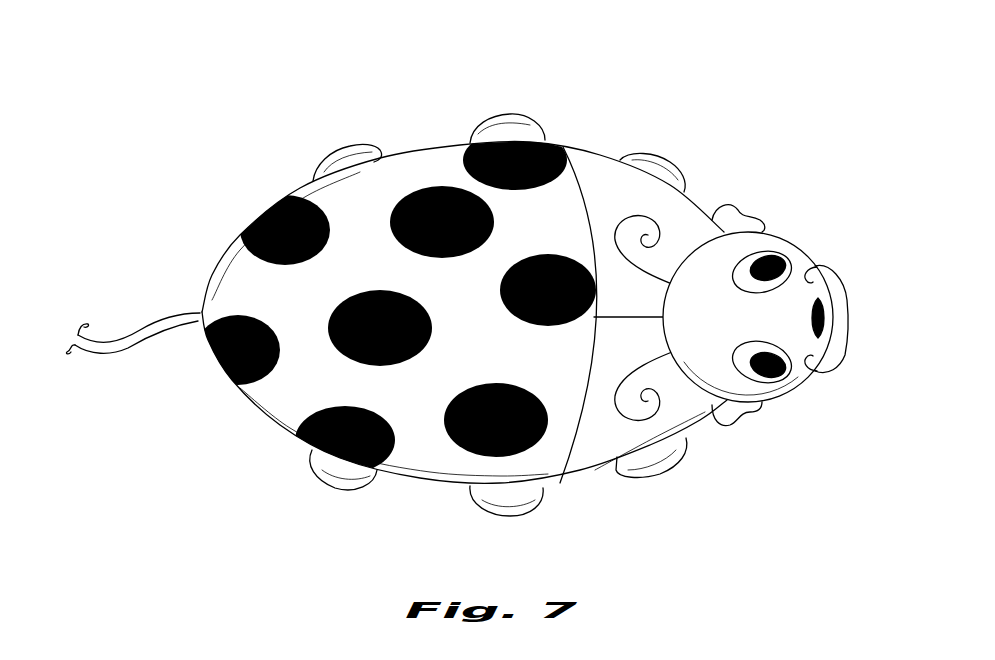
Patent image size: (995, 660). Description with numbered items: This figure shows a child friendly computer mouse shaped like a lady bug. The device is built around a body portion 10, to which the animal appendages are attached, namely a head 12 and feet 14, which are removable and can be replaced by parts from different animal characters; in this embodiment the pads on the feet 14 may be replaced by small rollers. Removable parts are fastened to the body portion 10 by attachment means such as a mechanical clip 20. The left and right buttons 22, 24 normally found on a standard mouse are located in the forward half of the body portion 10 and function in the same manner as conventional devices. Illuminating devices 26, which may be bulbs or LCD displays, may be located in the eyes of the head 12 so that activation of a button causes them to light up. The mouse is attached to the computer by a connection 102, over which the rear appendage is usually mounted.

The body portion 10 is at (387, 188).
The head 12 is at (783, 380).
The feet 14 is at (327, 467).
The mechanical clip 20 is at (740, 215).
The left button 22 is at (602, 185).
The right button 24 is at (672, 410).
The illuminating device 26 is at (777, 262).
The connection 102 is at (140, 347).